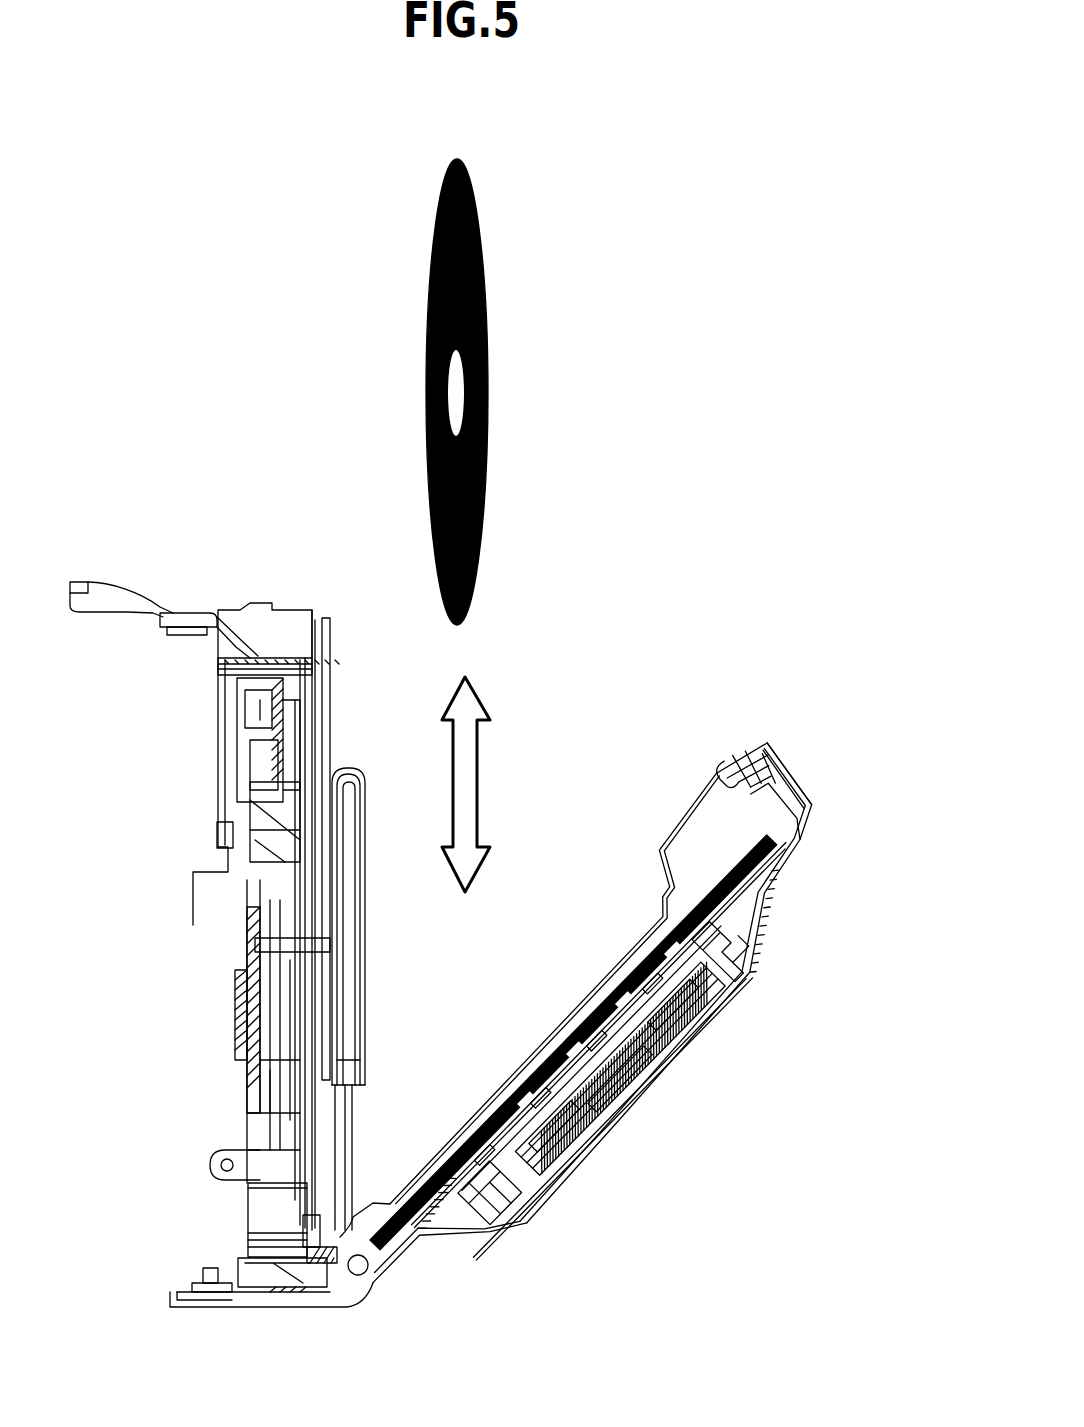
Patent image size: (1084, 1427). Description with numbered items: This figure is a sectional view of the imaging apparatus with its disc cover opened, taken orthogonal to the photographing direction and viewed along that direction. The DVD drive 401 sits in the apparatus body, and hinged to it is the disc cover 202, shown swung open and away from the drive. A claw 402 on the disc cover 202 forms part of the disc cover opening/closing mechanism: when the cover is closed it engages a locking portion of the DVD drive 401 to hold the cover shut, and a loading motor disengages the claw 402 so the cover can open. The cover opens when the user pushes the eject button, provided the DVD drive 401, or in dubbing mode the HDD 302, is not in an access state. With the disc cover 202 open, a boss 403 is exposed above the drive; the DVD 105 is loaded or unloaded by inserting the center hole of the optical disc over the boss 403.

The DVD 105 is at (487, 310).
The disc cover 202 is at (795, 750).
The HDD 302 is at (670, 1028).
The DVD drive 401 is at (330, 828).
The claw 402 is at (733, 753).
The boss 403 is at (375, 945).